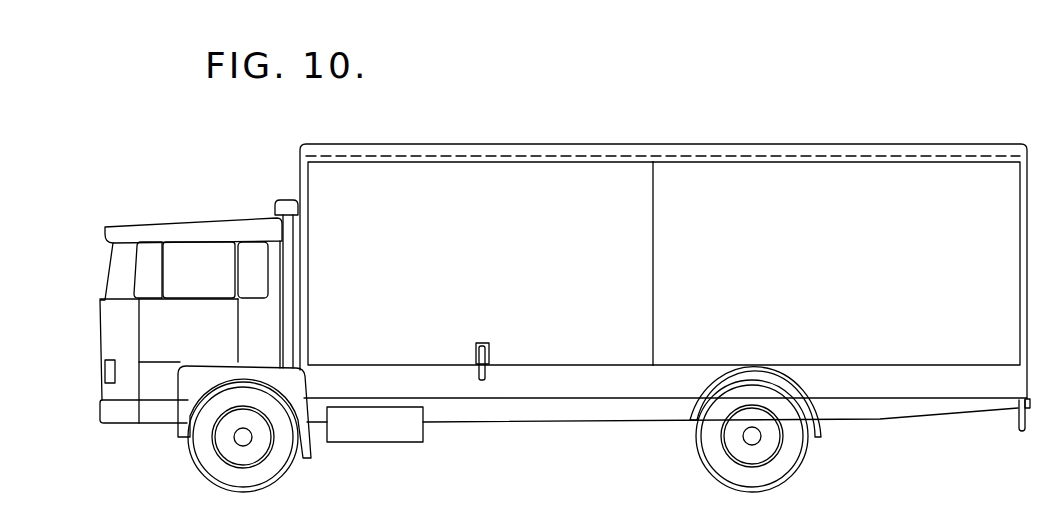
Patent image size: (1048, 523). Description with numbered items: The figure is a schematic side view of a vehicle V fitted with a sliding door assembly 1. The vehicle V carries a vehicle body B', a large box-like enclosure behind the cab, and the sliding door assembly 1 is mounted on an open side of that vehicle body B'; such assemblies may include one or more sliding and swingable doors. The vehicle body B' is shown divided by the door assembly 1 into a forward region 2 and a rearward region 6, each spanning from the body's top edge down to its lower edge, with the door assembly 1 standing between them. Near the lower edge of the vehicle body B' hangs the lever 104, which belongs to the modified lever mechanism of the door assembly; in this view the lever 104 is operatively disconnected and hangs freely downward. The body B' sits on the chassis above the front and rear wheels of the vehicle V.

The vehicle V is at (158, 221).
The vehicle body B' is at (663, 247).
The sliding door assembly 1 is at (656, 192).
The front compartment 2 is at (425, 172).
The rear compartment 6 is at (845, 172).
The lever 104 is at (484, 381).